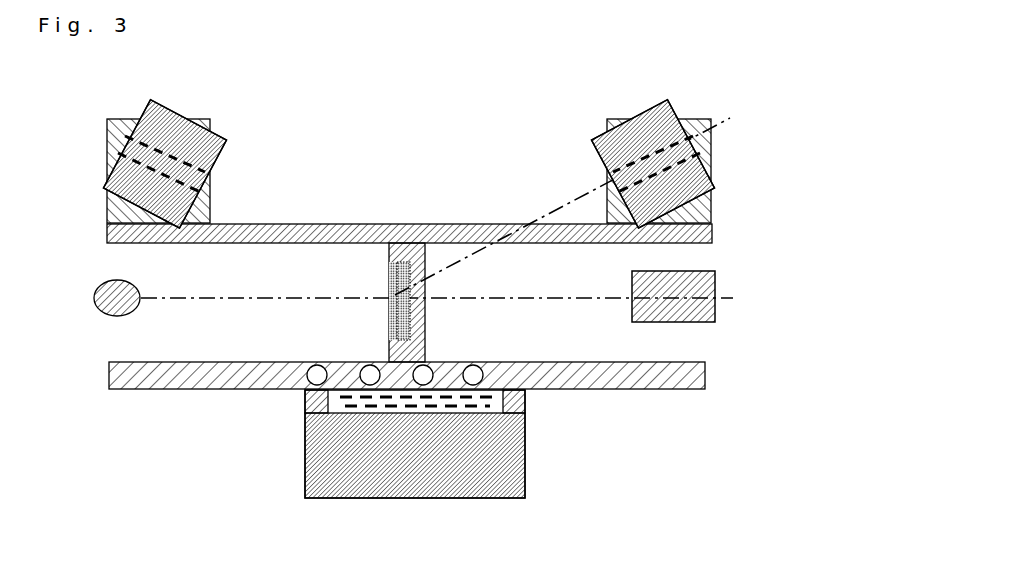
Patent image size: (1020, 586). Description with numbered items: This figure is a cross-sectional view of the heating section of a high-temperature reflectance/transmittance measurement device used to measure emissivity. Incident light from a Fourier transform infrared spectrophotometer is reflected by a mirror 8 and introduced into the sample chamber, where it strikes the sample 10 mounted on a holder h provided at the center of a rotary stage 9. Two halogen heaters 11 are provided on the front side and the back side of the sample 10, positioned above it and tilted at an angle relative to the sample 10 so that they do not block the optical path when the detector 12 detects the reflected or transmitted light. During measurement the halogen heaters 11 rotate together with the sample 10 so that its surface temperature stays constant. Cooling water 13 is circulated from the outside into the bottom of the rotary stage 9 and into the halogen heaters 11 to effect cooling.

The mirror 8 is at (113, 315).
The rotary stage 9 is at (330, 460).
The sample 10 is at (386, 300).
The halogen heater 11 is at (228, 143).
The detector 12 is at (686, 316).
The cooling water 13 is at (185, 180).
The holder h is at (424, 333).